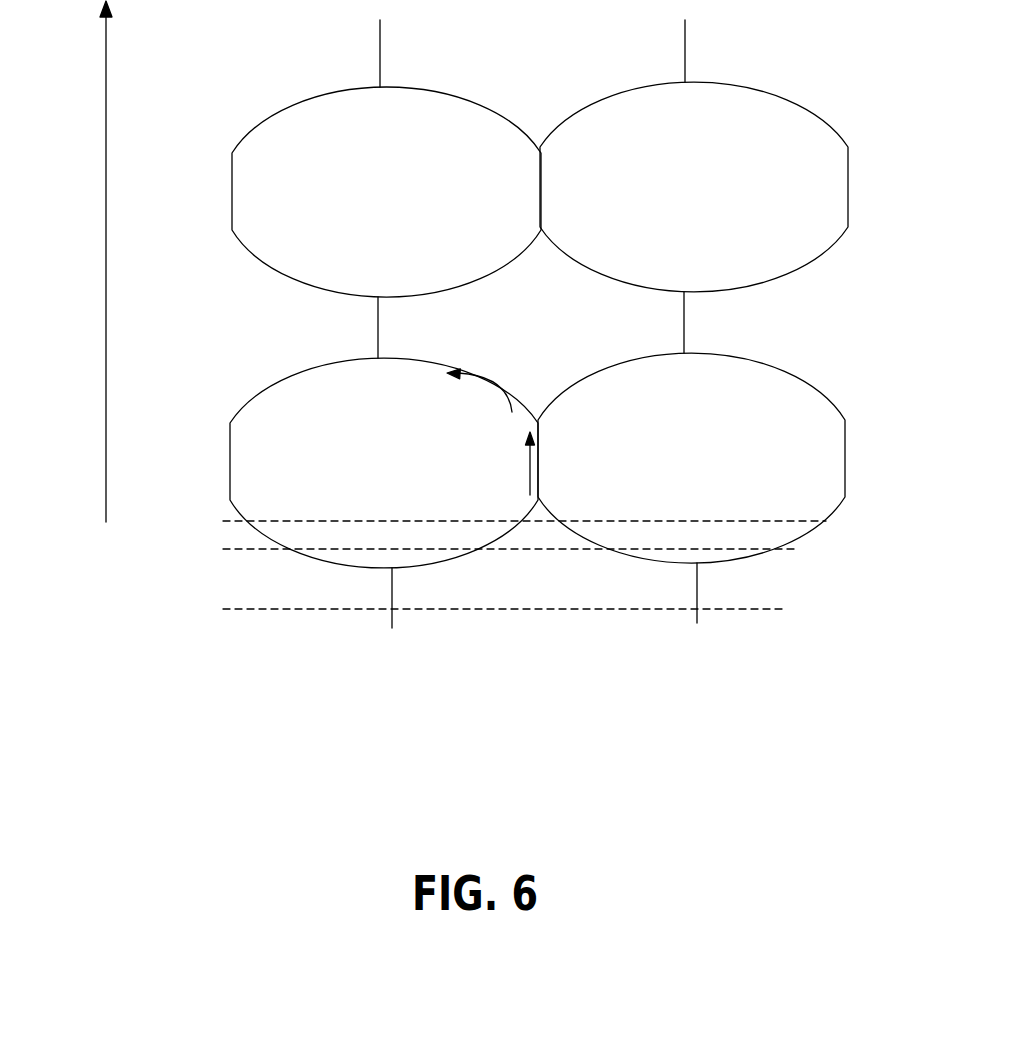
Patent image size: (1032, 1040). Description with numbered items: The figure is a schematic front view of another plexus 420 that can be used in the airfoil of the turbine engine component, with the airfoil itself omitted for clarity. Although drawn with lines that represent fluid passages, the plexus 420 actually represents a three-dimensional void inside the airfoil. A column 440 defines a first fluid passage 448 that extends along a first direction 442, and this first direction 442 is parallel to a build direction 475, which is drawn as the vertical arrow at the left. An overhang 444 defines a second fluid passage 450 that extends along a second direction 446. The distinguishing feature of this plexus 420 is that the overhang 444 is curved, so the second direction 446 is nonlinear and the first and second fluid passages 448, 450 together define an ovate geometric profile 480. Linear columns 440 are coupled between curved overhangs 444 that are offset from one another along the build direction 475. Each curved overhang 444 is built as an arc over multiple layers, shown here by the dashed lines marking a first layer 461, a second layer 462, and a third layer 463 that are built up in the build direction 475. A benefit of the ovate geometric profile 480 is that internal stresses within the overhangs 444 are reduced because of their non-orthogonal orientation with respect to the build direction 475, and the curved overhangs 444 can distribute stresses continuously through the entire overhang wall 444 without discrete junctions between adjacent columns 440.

The plexus 420 is at (849, 92).
The column 440 is at (393, 620).
The first direction 442 is at (531, 460).
The overhang 444 is at (697, 356).
The second direction 446 is at (500, 393).
The first fluid passage 448 is at (556, 466).
The second fluid passage 450 is at (485, 363).
The first layer 461 is at (785, 609).
The second layer 462 is at (795, 549).
The third layer 463 is at (826, 522).
The build direction 475 is at (104, 55).
The ovate geometric profile 480 is at (335, 128).